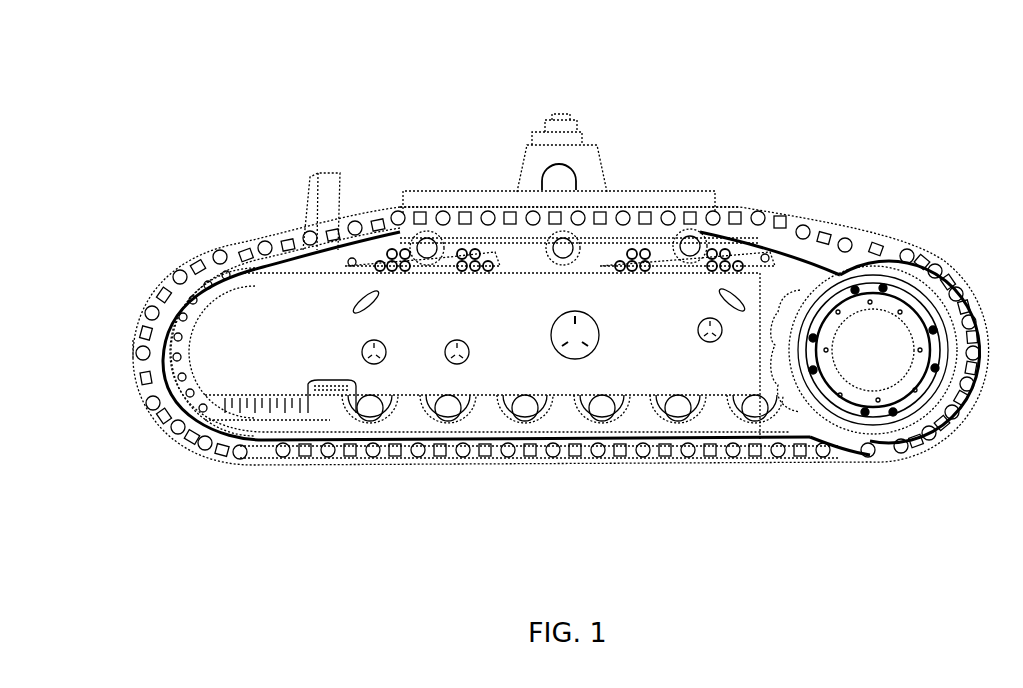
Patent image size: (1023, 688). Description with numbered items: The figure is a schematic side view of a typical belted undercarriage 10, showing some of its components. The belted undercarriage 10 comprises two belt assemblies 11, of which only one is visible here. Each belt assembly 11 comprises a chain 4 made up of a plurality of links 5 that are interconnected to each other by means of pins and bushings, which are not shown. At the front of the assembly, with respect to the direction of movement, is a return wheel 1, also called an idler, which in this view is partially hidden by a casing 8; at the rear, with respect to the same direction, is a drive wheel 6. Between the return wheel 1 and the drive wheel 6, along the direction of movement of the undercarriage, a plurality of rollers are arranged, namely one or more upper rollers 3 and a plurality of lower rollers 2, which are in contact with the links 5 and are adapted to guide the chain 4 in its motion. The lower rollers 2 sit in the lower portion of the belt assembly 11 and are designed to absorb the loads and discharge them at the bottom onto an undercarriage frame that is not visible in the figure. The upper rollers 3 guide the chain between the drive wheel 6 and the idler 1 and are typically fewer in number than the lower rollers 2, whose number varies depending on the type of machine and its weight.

The return wheel 1 is at (200, 416).
The lower rollers 2 is at (375, 430).
The upper rollers 3 is at (427, 238).
The chain 4 is at (879, 236).
The links 5 is at (192, 260).
The drive wheel 6 is at (798, 425).
The casing 8 is at (212, 352).
The belted undercarriage 10 is at (289, 112).
The belt assembly 11 is at (112, 304).